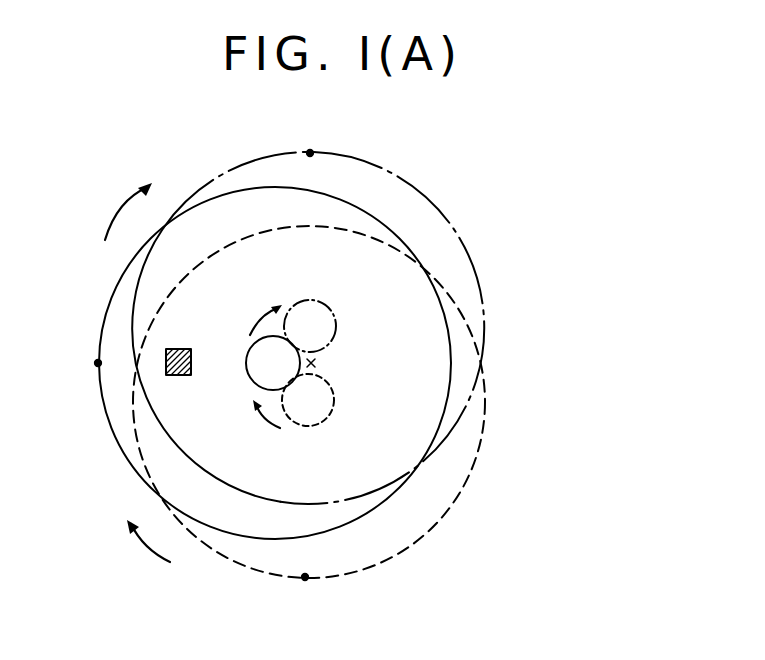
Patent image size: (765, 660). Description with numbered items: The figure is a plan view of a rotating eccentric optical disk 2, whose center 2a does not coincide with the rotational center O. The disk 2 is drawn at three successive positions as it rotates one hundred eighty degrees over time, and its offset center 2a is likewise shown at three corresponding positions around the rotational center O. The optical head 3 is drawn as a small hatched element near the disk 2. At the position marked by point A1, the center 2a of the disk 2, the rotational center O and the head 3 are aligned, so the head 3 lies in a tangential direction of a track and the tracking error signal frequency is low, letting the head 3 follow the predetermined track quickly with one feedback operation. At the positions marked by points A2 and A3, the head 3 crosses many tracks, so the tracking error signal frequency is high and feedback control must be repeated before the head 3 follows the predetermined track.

The disk 2 is at (415, 188).
The center of the disk 2a is at (310, 330).
The optical head 3 is at (181, 350).
The rotational center O is at (316, 363).
The point A1 is at (98, 363).
The point A2 is at (305, 577).
The point A3 is at (310, 153).